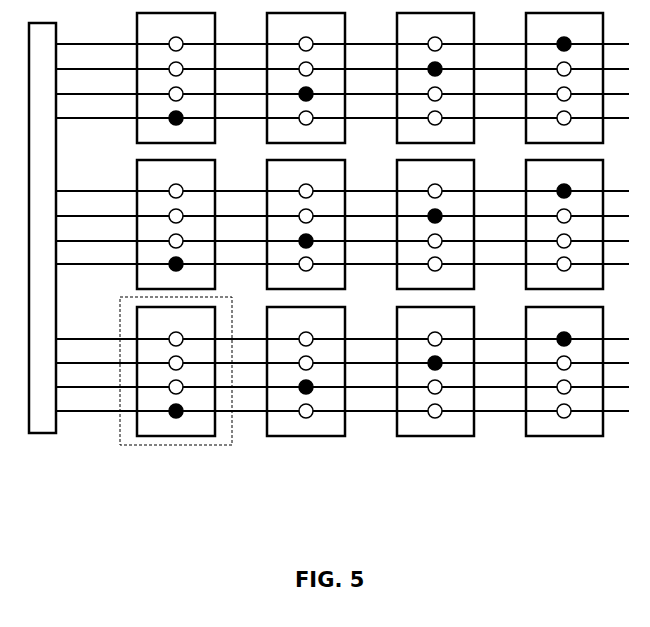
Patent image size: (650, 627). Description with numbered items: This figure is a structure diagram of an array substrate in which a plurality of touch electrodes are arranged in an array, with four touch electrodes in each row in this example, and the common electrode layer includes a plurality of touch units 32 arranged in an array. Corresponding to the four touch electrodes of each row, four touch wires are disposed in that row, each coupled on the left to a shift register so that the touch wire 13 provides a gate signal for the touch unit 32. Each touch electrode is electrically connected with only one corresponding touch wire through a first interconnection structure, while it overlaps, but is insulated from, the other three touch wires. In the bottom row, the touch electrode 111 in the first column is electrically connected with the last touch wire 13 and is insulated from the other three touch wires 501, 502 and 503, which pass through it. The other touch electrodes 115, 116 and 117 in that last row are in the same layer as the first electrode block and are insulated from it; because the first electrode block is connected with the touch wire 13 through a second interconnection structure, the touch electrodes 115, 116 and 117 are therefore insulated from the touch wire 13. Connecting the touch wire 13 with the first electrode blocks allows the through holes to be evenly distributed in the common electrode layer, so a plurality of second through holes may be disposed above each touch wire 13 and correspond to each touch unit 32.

The touch wire 13 is at (72, 413).
The touch unit 32 is at (197, 446).
The touch electrode 111 is at (195, 430).
The touch electrode 115 is at (313, 423).
The touch electrode 116 is at (443, 425).
The touch electrode 117 is at (573, 425).
The touch wire 501 is at (243, 388).
The touch wire 502 is at (373, 363).
The touch wire 503 is at (503, 338).